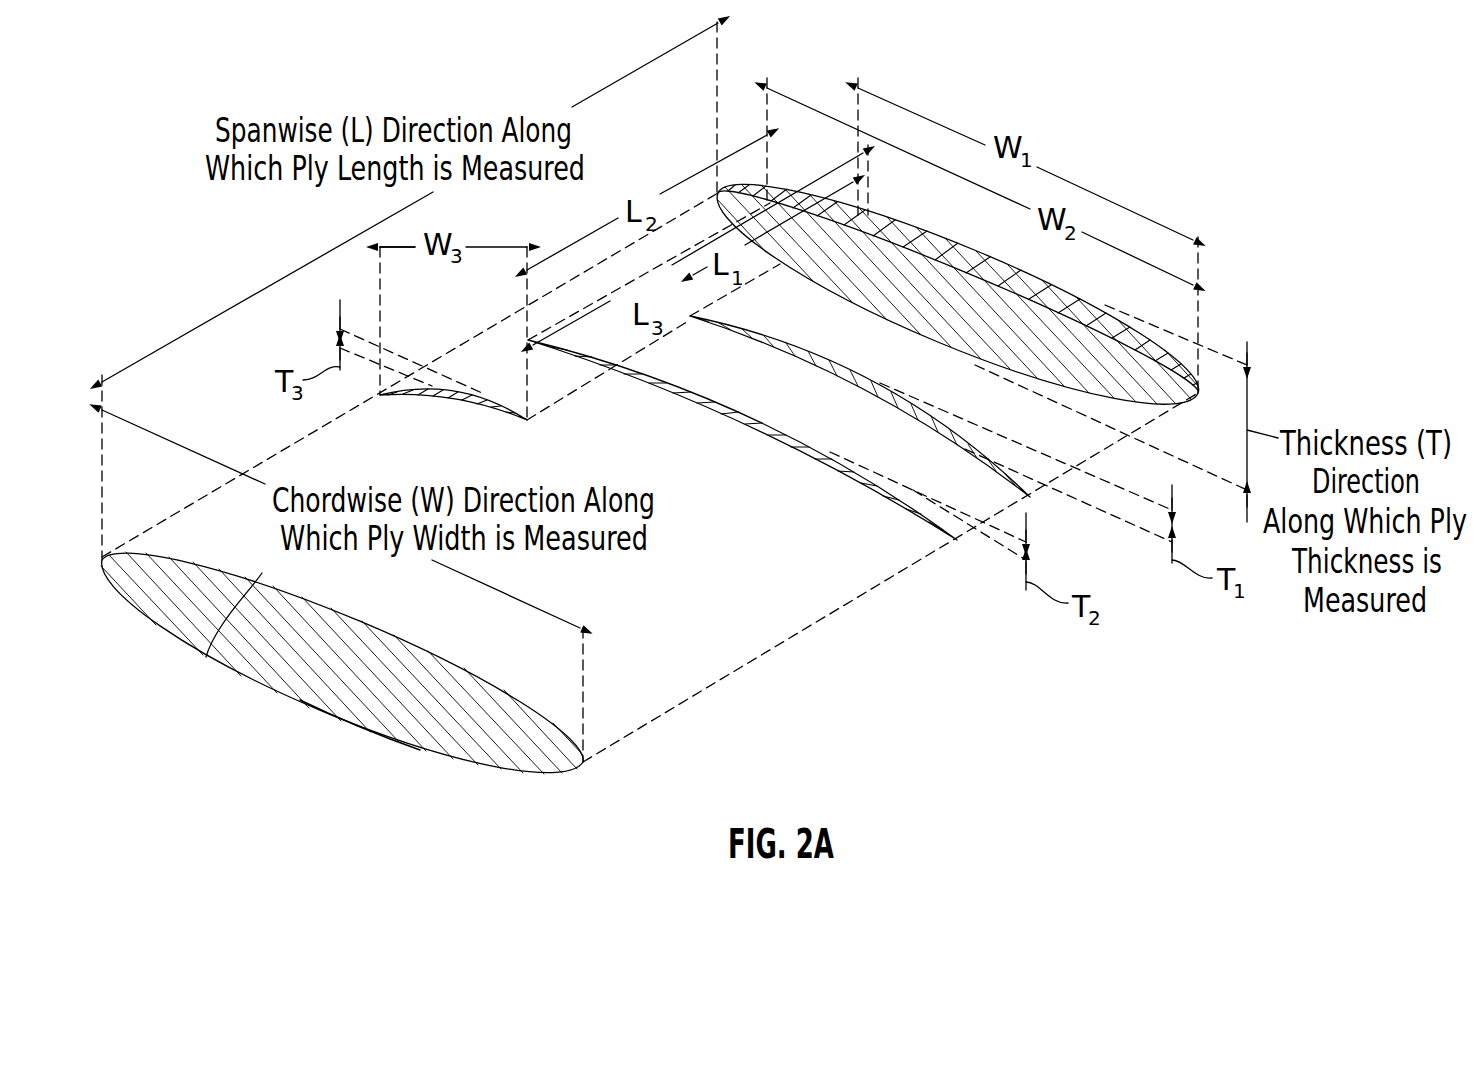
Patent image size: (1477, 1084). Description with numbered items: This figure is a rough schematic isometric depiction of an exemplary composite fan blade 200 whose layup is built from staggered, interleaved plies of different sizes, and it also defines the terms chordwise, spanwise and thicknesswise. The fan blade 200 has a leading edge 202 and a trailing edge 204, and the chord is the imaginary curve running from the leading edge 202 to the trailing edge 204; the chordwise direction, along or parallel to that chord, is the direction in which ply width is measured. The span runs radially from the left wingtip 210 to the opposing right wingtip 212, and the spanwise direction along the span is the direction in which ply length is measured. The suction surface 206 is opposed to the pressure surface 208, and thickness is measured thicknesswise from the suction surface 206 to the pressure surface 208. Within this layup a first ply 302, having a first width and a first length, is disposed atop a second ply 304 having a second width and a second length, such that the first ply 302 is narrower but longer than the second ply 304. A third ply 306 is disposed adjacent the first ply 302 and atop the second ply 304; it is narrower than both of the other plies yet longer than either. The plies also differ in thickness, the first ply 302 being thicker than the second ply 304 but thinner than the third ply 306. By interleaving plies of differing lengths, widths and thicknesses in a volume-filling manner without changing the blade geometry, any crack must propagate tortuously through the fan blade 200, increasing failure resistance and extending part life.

The composite fan blade 200 is at (1148, 78).
The leading edge 202 is at (487, 251).
The trailing edge 204 is at (875, 588).
The suction surface 206 is at (206, 657).
The pressure surface 208 is at (338, 718).
The left wingtip 210 is at (317, 660).
The right wingtip 212 is at (944, 310).
The first ply 302 is at (1077, 450).
The second ply 304 is at (1007, 502).
The third ply 306 is at (563, 400).